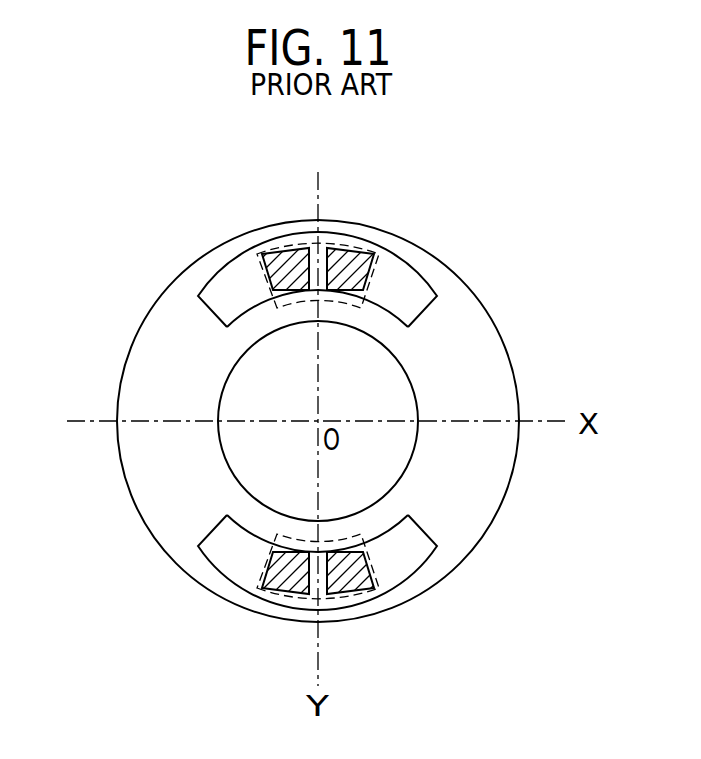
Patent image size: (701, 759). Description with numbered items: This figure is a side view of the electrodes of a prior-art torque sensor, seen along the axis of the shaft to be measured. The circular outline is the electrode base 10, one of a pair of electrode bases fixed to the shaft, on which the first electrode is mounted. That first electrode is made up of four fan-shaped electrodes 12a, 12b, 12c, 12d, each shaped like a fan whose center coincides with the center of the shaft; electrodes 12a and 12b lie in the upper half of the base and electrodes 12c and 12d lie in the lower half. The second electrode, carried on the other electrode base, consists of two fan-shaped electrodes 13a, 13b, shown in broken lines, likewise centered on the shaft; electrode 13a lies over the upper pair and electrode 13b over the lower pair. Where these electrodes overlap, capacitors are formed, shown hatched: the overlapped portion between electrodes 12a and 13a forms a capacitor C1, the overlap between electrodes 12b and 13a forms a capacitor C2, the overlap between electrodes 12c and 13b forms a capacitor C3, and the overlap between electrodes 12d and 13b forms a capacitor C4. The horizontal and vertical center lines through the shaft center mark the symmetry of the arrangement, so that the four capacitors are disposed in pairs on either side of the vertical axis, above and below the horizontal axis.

The electrode base 10 is at (499, 331).
The electrode 12a is at (213, 314).
The electrode 12b is at (407, 268).
The electrode 12c is at (437, 548).
The electrode 12d is at (199, 545).
The electrode 13a is at (262, 252).
The electrode 13b is at (378, 586).
The capacitor C1 is at (290, 250).
The capacitor C2 is at (346, 250).
The capacitor C3 is at (346, 592).
The capacitor C4 is at (290, 592).